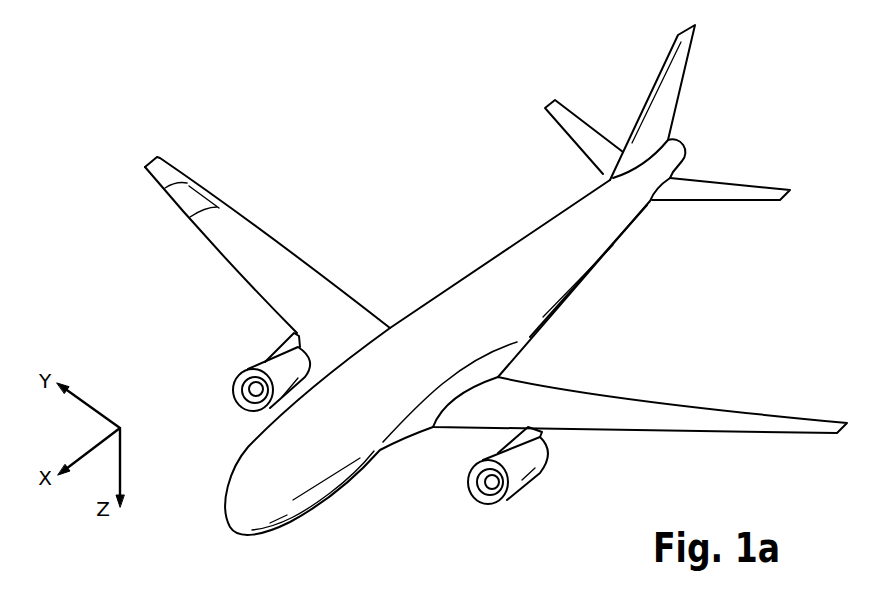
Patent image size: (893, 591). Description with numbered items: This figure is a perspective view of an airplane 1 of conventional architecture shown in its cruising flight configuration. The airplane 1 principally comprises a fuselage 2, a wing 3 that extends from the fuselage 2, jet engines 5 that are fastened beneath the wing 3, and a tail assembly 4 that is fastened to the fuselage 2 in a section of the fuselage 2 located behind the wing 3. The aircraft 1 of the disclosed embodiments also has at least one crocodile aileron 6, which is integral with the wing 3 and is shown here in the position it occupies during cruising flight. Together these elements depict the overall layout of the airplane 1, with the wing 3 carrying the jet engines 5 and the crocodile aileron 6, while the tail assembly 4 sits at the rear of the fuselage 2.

The airplane 1 is at (435, 228).
The fuselage 2 is at (553, 280).
The wing 3 is at (640, 420).
The tail assembly 4 is at (722, 113).
The jet engines 5 is at (535, 477).
The crocodile aileron 6 is at (207, 192).